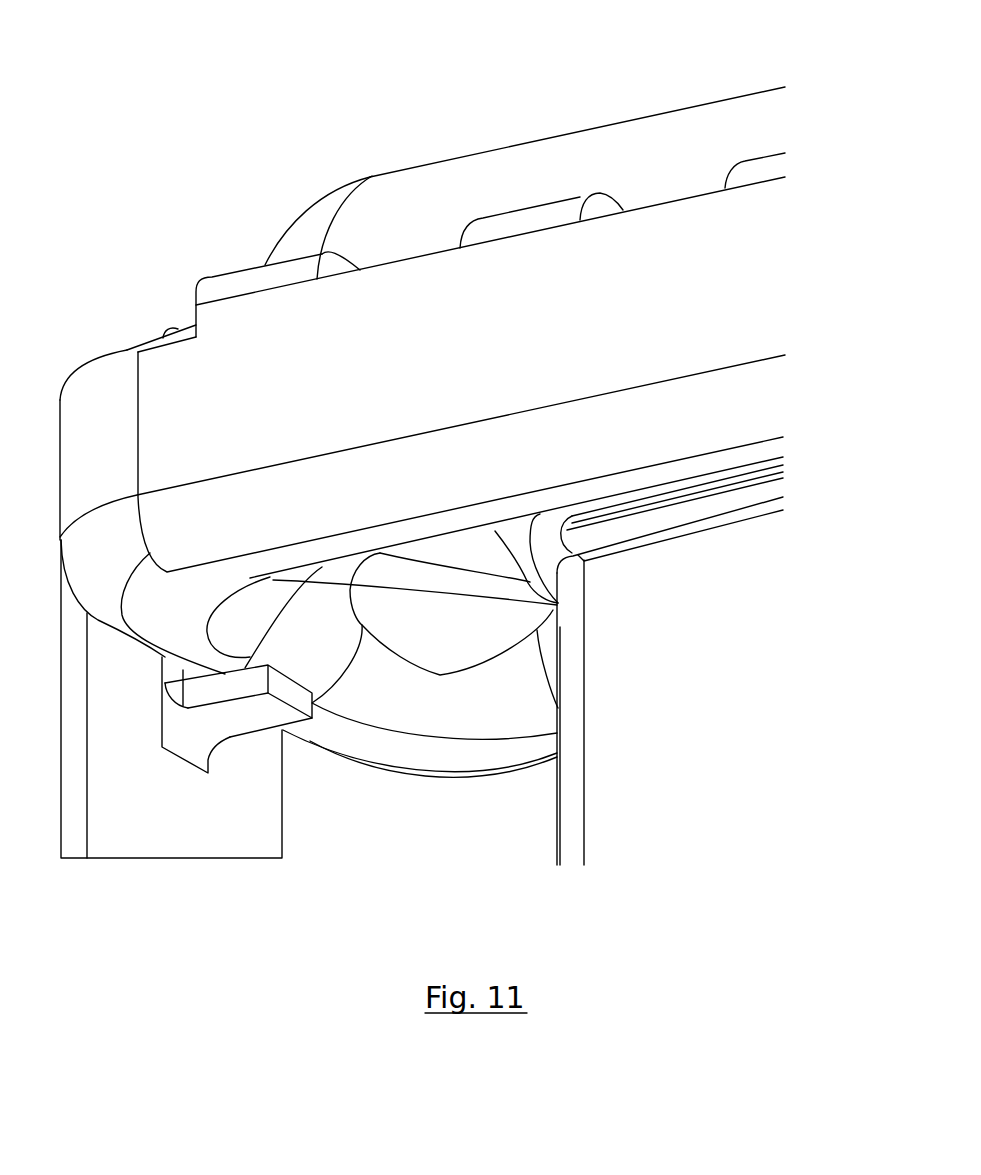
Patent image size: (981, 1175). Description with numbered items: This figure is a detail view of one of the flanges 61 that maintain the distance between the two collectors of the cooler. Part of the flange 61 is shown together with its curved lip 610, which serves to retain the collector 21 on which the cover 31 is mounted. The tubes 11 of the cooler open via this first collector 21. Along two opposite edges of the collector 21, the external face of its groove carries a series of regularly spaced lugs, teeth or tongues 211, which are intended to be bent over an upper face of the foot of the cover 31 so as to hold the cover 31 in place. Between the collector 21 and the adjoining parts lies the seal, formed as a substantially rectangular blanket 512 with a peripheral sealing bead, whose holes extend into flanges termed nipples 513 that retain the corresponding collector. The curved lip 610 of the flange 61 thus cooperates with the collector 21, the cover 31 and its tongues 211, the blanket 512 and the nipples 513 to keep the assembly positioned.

The tube 11 is at (742, 690).
The first collector 21 is at (767, 338).
The lugs, teeth or tongues 211 is at (338, 266).
The cover 31 is at (768, 136).
The blanket 512 is at (780, 470).
The nipples 513 is at (763, 487).
The flange 61 is at (118, 858).
The curved lip 610 is at (262, 718).